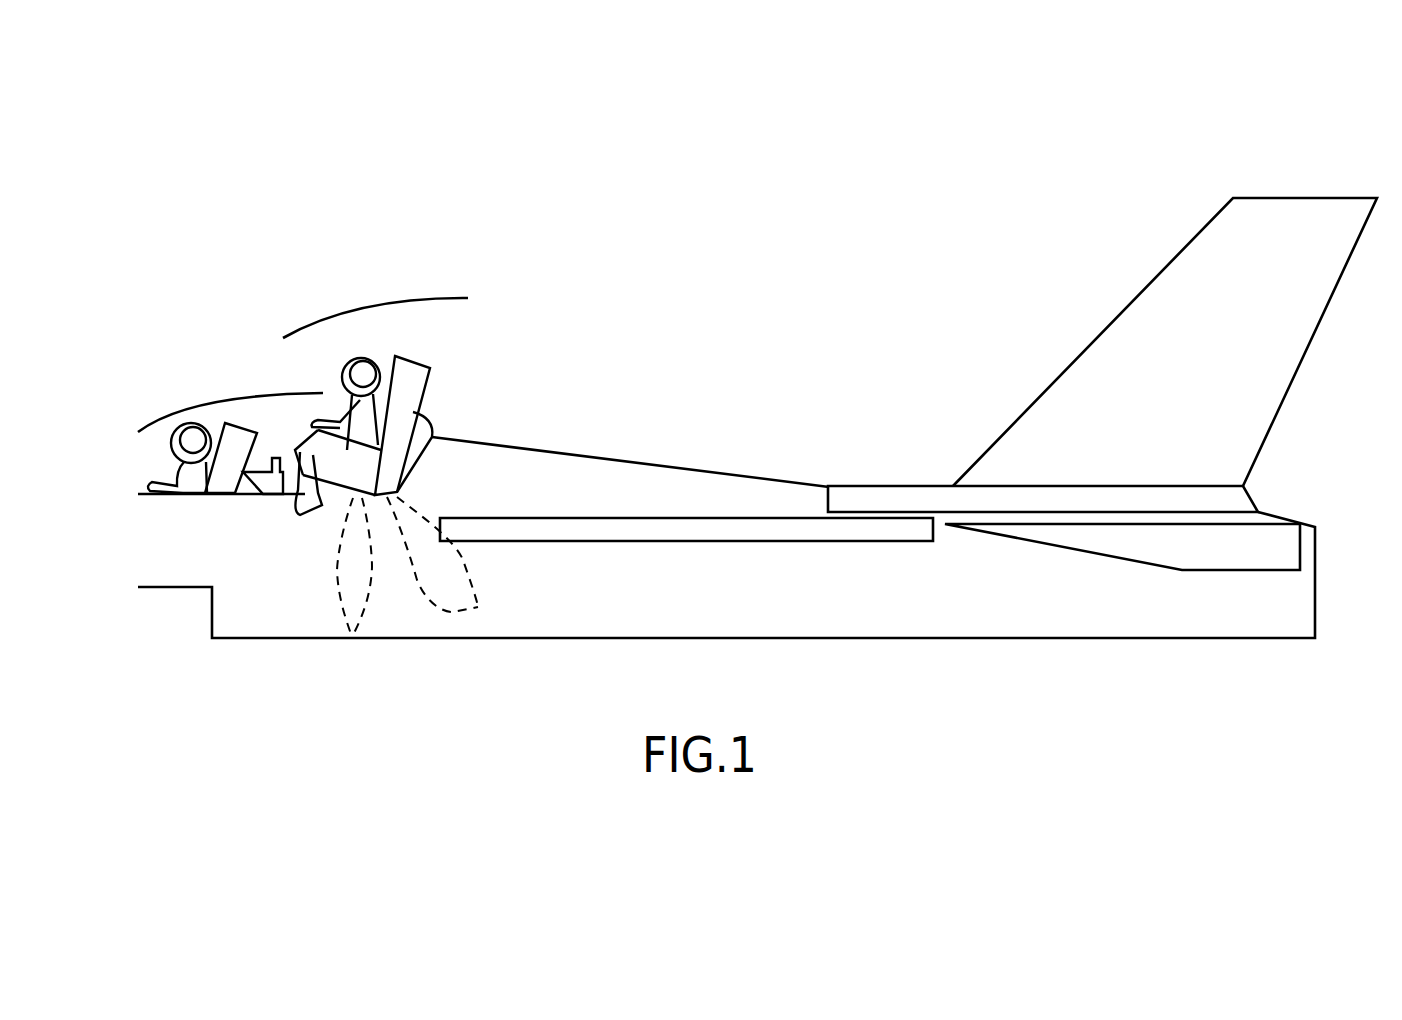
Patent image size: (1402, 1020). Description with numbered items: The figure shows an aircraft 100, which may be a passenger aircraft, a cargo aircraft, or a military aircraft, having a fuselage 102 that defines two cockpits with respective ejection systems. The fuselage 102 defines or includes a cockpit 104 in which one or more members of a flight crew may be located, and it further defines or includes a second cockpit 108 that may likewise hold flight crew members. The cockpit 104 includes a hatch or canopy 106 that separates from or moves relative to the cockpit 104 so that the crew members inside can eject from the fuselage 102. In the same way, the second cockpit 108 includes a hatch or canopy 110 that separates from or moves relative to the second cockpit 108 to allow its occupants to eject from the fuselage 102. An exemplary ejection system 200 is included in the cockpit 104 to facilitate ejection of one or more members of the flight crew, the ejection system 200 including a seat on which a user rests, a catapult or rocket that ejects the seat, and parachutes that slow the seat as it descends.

The aircraft 100 is at (921, 243).
The fuselage 102 is at (859, 480).
The cockpit 104 is at (166, 386).
The canopy 106 is at (253, 393).
The second cockpit 108 is at (424, 370).
The canopy 110 is at (327, 315).
The ejection system 200 is at (441, 285).